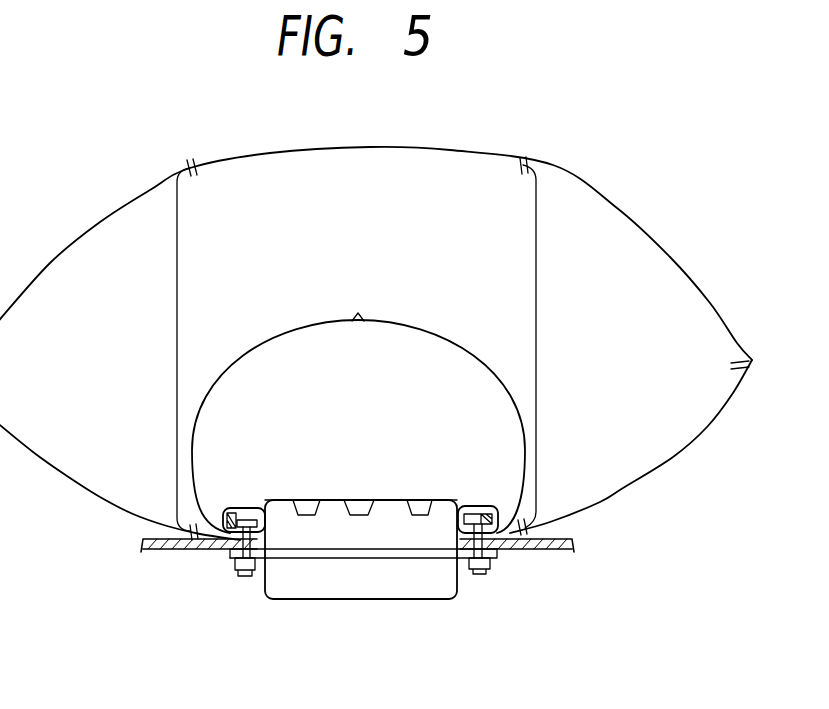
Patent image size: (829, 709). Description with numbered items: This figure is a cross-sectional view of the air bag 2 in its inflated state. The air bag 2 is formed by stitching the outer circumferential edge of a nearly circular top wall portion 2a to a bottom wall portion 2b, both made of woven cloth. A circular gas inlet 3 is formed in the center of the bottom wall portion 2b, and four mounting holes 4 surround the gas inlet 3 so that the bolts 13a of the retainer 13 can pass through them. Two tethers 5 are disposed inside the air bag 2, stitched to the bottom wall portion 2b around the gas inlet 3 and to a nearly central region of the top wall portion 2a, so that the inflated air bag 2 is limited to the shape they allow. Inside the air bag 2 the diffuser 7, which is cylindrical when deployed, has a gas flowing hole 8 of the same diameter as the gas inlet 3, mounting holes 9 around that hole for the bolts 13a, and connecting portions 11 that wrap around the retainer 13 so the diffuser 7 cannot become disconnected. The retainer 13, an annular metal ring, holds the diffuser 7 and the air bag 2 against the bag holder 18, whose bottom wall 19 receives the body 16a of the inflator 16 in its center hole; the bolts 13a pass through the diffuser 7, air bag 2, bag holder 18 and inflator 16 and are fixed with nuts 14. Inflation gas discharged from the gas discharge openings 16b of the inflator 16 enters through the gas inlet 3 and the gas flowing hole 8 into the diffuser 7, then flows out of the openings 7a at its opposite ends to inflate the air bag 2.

The air bag 2 is at (376, 324).
The top wall portion 2a is at (378, 148).
The bottom wall portion 2b is at (625, 492).
The gas inlet 3 is at (263, 527).
The mounting holes 4 is at (253, 544).
The tethers 5 is at (178, 253).
The diffuser 7 is at (358, 404).
The openings 7a is at (318, 340).
The gas flowing hole 8 is at (267, 529).
The mounting holes 9 is at (242, 513).
The connecting portions 11 is at (472, 506).
The retainer 13 is at (253, 519).
The bolts 13a is at (245, 577).
The nuts 14 is at (478, 575).
The inflator 16 is at (361, 582).
The body 16a is at (388, 588).
The gas discharge openings 16b is at (360, 500).
The bag holder 18 is at (330, 586).
The bottom wall 19 is at (153, 552).